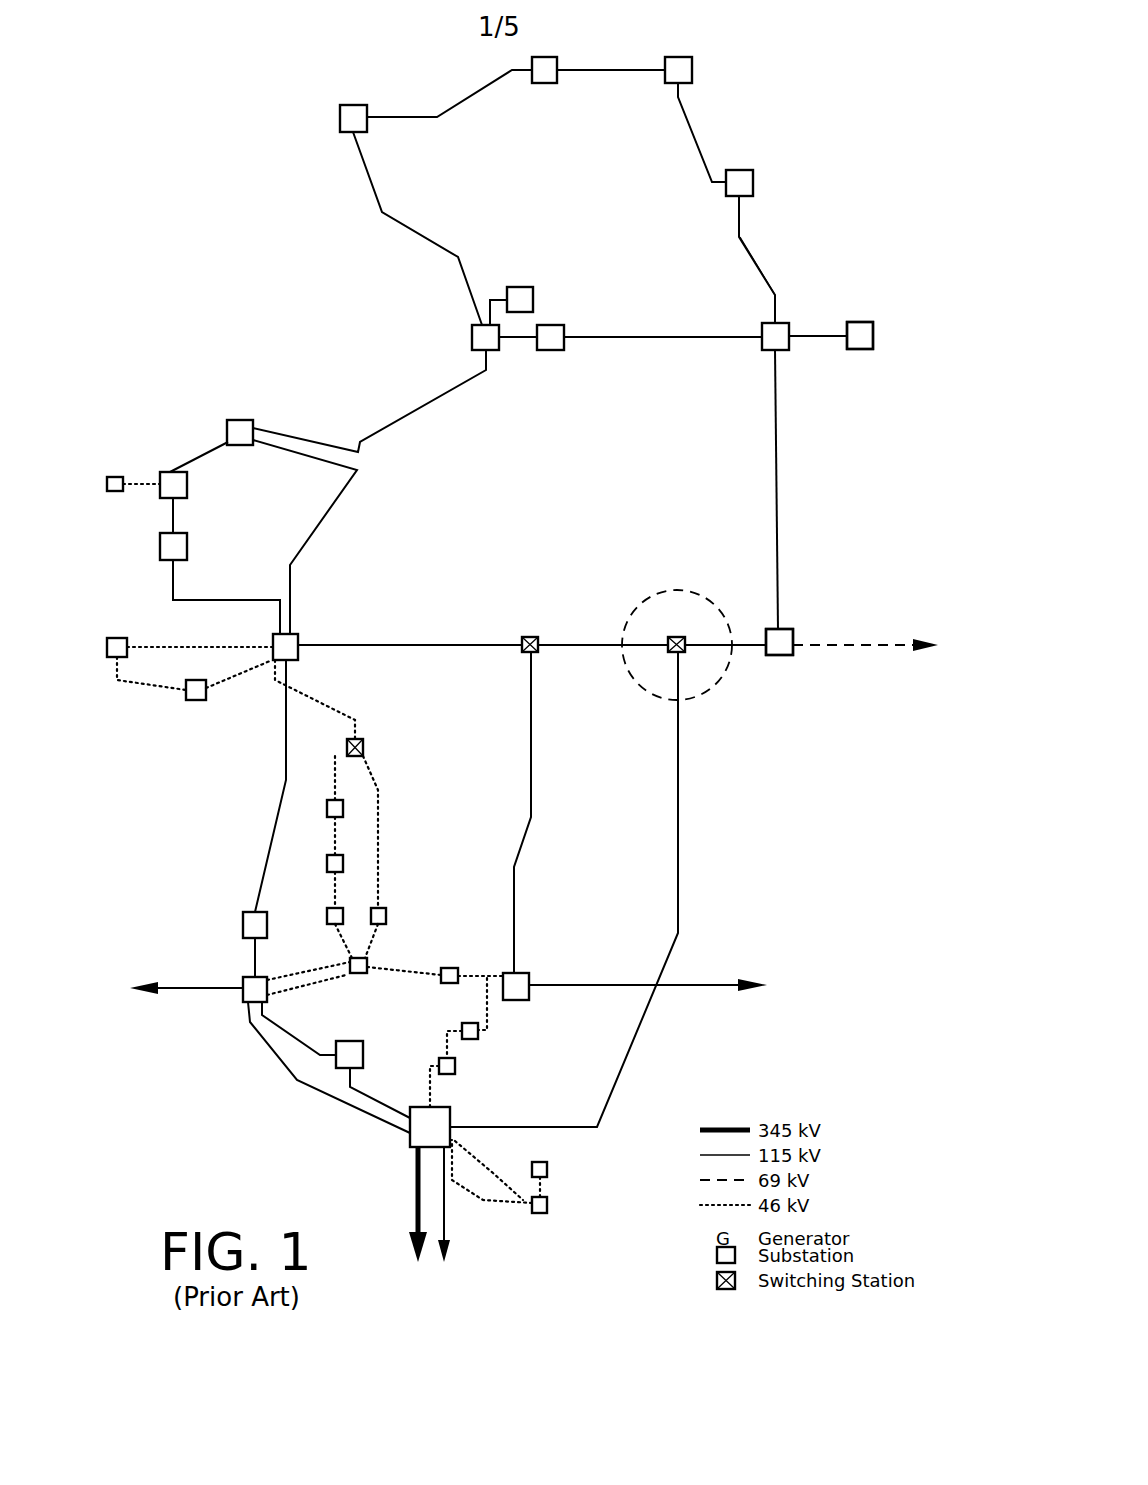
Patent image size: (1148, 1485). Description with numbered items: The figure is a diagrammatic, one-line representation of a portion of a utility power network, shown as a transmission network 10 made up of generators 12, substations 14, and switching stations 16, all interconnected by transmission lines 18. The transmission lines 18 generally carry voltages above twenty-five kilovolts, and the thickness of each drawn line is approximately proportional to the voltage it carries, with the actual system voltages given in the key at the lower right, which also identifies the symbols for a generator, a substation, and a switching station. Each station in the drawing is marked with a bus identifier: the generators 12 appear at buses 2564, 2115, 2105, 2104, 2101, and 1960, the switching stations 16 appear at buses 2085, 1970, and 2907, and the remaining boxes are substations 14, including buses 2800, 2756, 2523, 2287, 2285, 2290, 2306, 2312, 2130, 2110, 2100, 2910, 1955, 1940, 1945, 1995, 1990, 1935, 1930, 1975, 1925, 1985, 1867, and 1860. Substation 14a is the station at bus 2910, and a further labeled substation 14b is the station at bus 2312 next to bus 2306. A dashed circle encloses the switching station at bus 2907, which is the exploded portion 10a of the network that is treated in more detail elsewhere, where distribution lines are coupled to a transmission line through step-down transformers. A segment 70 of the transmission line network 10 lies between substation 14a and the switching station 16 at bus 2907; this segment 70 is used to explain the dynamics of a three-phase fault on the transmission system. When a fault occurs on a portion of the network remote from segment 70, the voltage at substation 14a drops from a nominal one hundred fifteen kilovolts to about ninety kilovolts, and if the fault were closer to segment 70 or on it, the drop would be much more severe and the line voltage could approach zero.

The transmission network 10 is at (836, 115).
The exploded portion 10a is at (659, 701).
The generators 12 is at (415, 579).
The substations 14 is at (426, 616).
The substation 14a is at (780, 655).
The substation 2312 14b is at (790, 342).
The switching stations 16 is at (462, 669).
The transmission lines 18 is at (472, 92).
The segment 70 is at (747, 645).
The bus 2800 is at (332, 119).
The bus 2756 is at (569, 65).
The bus 2564 is at (701, 68).
The bus 2523 is at (763, 183).
The bus 2287 is at (544, 299).
The bus 2285 is at (463, 339).
The bus 2290 is at (574, 332).
The bus 2306 is at (758, 347).
The bus 2312 is at (884, 335).
The bus 2130 is at (219, 429).
The bus 2115 is at (197, 485).
The bus 2110 is at (112, 496).
The bus 2105 is at (197, 546).
The bus 2104 is at (115, 639).
The bus 2101 is at (198, 703).
The bus 2100 is at (308, 641).
The bus 2085 is at (549, 654).
The bus 2907 is at (695, 654).
The bus 2910 is at (802, 635).
The bus 1970 is at (378, 743).
The bus 1960 is at (369, 978).
The bus 1955 is at (315, 863).
The bus 1940 is at (315, 916).
The bus 1945 is at (401, 916).
The bus 1995 is at (233, 925).
The bus 1990 is at (232, 986).
The bus 1935 is at (358, 980).
The bus 1930 is at (454, 993).
The bus 1975 is at (538, 992).
The bus 1925 is at (468, 1068).
The bus 1985 is at (371, 1054).
The bus 1867 is at (562, 1173).
The bus 1860 is at (562, 1208).